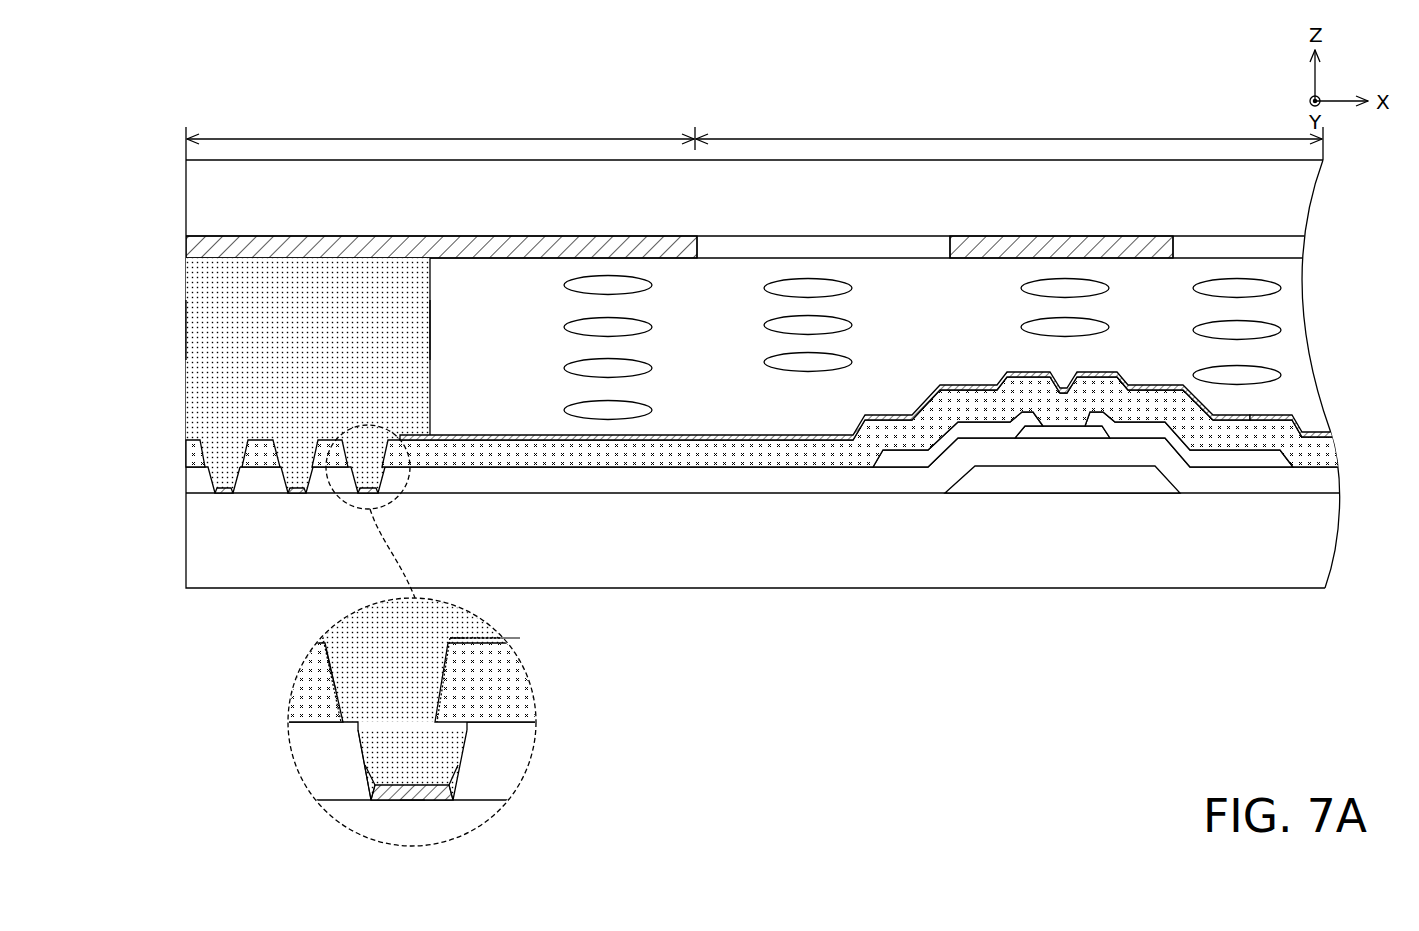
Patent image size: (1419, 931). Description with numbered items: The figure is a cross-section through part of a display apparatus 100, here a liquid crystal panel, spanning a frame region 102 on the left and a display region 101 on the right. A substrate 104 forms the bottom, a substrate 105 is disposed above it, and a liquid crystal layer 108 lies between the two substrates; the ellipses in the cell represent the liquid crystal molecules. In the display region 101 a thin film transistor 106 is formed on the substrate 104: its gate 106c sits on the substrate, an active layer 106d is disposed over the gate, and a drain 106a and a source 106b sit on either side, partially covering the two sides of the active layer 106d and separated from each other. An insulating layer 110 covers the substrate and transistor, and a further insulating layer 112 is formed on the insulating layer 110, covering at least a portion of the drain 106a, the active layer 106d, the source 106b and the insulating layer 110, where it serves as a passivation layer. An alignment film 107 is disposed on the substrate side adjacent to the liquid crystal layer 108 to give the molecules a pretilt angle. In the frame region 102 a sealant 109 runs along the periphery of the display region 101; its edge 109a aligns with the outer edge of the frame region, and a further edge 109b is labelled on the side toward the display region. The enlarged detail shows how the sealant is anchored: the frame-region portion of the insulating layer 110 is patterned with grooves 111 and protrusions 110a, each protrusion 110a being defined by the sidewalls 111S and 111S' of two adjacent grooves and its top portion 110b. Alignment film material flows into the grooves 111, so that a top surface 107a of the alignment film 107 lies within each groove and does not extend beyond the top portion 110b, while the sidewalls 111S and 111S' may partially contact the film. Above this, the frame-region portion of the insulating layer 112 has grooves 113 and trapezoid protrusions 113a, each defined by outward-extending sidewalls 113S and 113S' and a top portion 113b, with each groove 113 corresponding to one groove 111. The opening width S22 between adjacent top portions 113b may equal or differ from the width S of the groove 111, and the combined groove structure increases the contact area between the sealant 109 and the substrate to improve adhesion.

The display apparatus 100 is at (160, 106).
The display region 101 is at (1009, 128).
The frame region 102 is at (440, 128).
The substrate 104 is at (1320, 553).
The substrate 105 is at (1292, 198).
The thin film transistor 106 is at (1083, 546).
The drain 106a is at (920, 458).
The source 106b is at (1189, 526).
The gate 106c is at (995, 482).
The active layer 106d is at (1088, 432).
The alignment film 107 is at (1327, 438).
The top surface of the alignment film 107a is at (414, 755).
The liquid crystal layer 108 is at (1302, 330).
The sealant 109 is at (325, 317).
The edge of the sealant 109a is at (184, 328).
The inner side surface of sealing member 109b is at (434, 324).
The insulating layer 110 is at (1328, 480).
The protrusion 110a is at (320, 762).
The top portion of the protrusion 110b is at (376, 727).
The groove 111 is at (229, 460).
The sidewall of the groove 111S is at (302, 800).
The sidewall of the groove 111S' is at (494, 810).
The insulating layer 112 is at (1325, 450).
The groove 113 is at (234, 436).
The protrusion 113a is at (478, 700).
The top portion of the protrusion 113b is at (485, 632).
The sidewall of the protrusion 113S is at (285, 669).
The sidewall of the protrusion 113S' is at (295, 644).
The width of the groove S is at (464, 735).
The opening width S22 is at (447, 643).